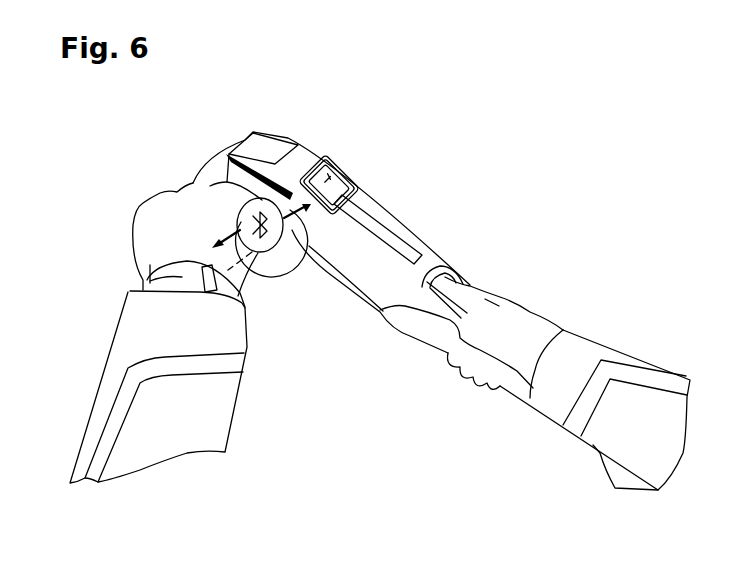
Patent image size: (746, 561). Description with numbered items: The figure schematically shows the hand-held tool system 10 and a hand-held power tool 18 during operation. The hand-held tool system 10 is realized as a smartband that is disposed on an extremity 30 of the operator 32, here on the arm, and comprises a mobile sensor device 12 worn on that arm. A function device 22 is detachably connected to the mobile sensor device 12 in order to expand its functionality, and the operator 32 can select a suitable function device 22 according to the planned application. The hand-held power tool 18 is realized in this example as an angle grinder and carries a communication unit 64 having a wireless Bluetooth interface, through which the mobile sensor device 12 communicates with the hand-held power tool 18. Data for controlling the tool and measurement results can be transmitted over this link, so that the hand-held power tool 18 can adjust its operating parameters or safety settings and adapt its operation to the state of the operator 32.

The hand-held tool system 10 is at (117, 273).
The mobile sensor device 12 is at (143, 282).
The hand-held power tool 18 is at (428, 200).
The function device 22 is at (249, 296).
The extremity 30 is at (143, 327).
The operator 32 is at (482, 420).
The communication unit 64 is at (338, 160).